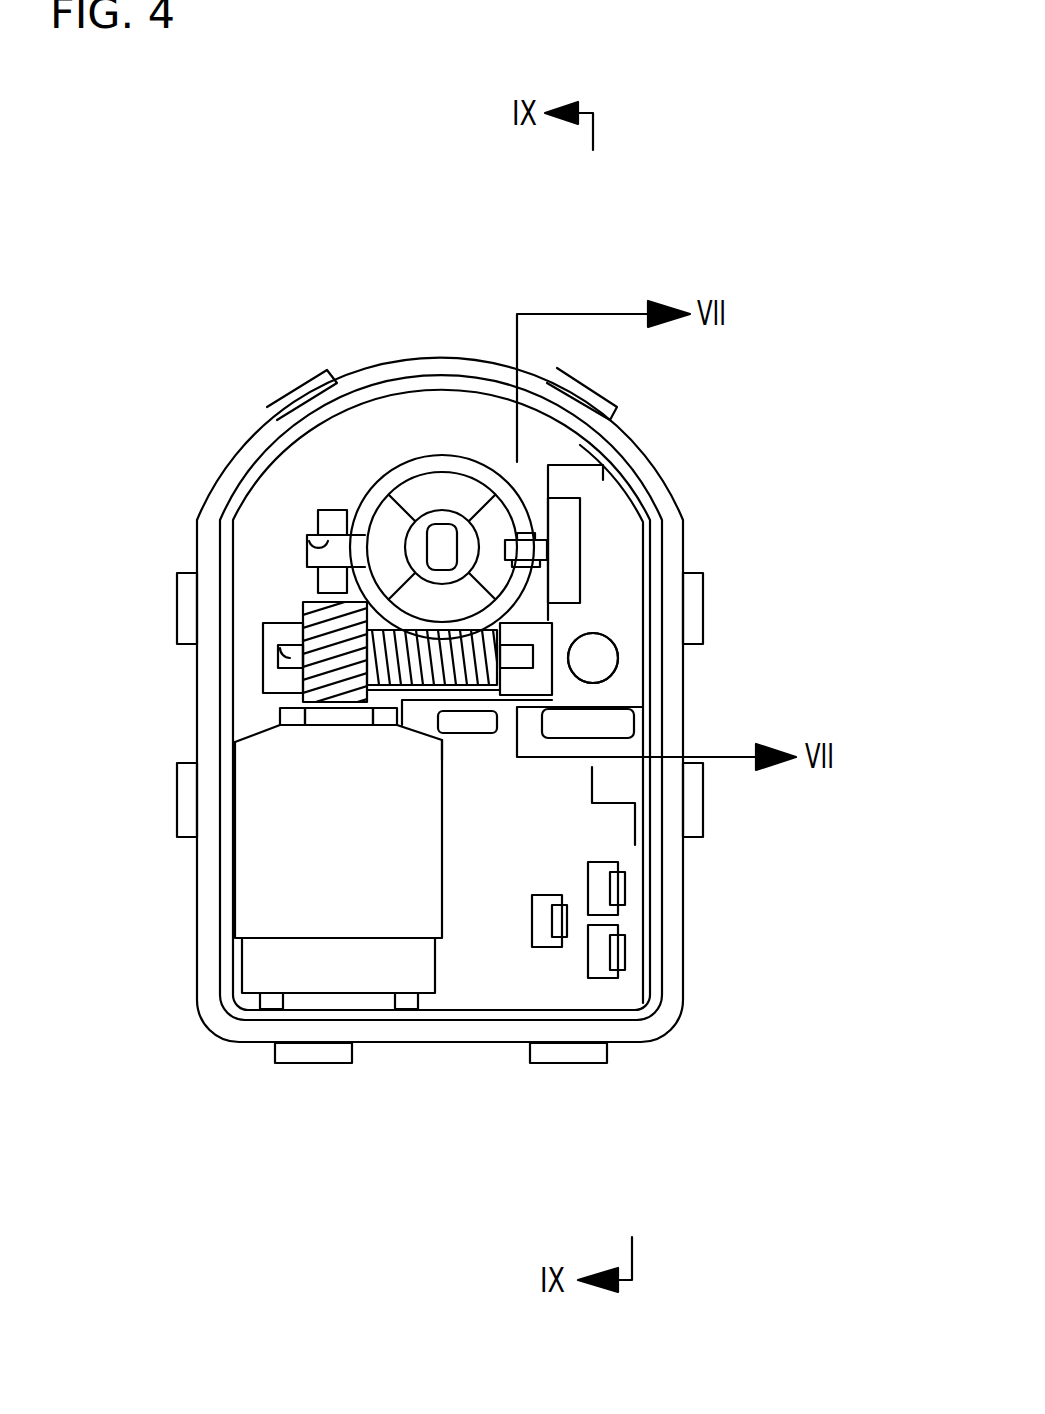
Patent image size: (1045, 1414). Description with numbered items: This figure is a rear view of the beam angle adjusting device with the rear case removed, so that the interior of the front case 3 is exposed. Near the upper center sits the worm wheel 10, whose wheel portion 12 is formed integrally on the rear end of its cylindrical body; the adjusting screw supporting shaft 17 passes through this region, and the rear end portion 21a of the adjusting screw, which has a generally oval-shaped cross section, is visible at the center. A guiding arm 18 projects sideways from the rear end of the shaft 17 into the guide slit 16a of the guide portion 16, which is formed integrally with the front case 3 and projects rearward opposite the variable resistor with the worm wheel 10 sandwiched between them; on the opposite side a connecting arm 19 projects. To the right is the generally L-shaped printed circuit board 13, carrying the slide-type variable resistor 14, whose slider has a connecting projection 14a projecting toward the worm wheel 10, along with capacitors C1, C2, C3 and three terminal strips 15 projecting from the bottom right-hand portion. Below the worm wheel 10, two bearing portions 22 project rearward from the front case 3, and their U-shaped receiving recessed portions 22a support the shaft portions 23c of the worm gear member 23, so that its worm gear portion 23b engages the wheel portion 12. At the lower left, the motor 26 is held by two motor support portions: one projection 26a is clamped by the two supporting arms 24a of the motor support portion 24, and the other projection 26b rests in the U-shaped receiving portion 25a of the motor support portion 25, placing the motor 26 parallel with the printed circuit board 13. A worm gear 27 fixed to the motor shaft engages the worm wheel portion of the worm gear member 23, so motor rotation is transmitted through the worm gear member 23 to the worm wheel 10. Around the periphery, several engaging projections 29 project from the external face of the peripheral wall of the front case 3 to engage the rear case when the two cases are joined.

The front case 3 is at (433, 352).
The worm wheel 10 is at (452, 457).
The wheel portion 12 is at (430, 517).
The printed circuit board 13 is at (637, 656).
The slide-type variable resistor 14 is at (573, 519).
The connecting projection 14a is at (565, 572).
The terminal strips 15 is at (620, 957).
The guide portion 16 is at (318, 512).
The guide slit 16a is at (302, 548).
The adjusting screw supporting shaft 17 is at (462, 467).
The guiding arm 18 is at (300, 560).
The connecting arm 19 is at (527, 537).
The rear end portion of the adjusting screw 21a is at (383, 473).
The bearing portions 22 is at (263, 683).
The receiving recessed portions 22a is at (277, 650).
The worm gear member 23 is at (470, 688).
The worm gear portion 23b is at (437, 690).
The shaft portions 23c is at (278, 660).
The motor support portion 24 is at (388, 722).
The supporting arms 24a is at (280, 714).
The motor support portion 25 is at (407, 1005).
The receiving portion 25a is at (290, 1003).
The motor 26 is at (250, 888).
The projection 26a is at (338, 720).
The projection 26b is at (372, 1005).
The worm gear 27 is at (277, 650).
The engaging projections 29 is at (312, 383).
The capacitor C1 is at (618, 663).
The capacitor C2 is at (614, 730).
The capacitor C3 is at (440, 742).